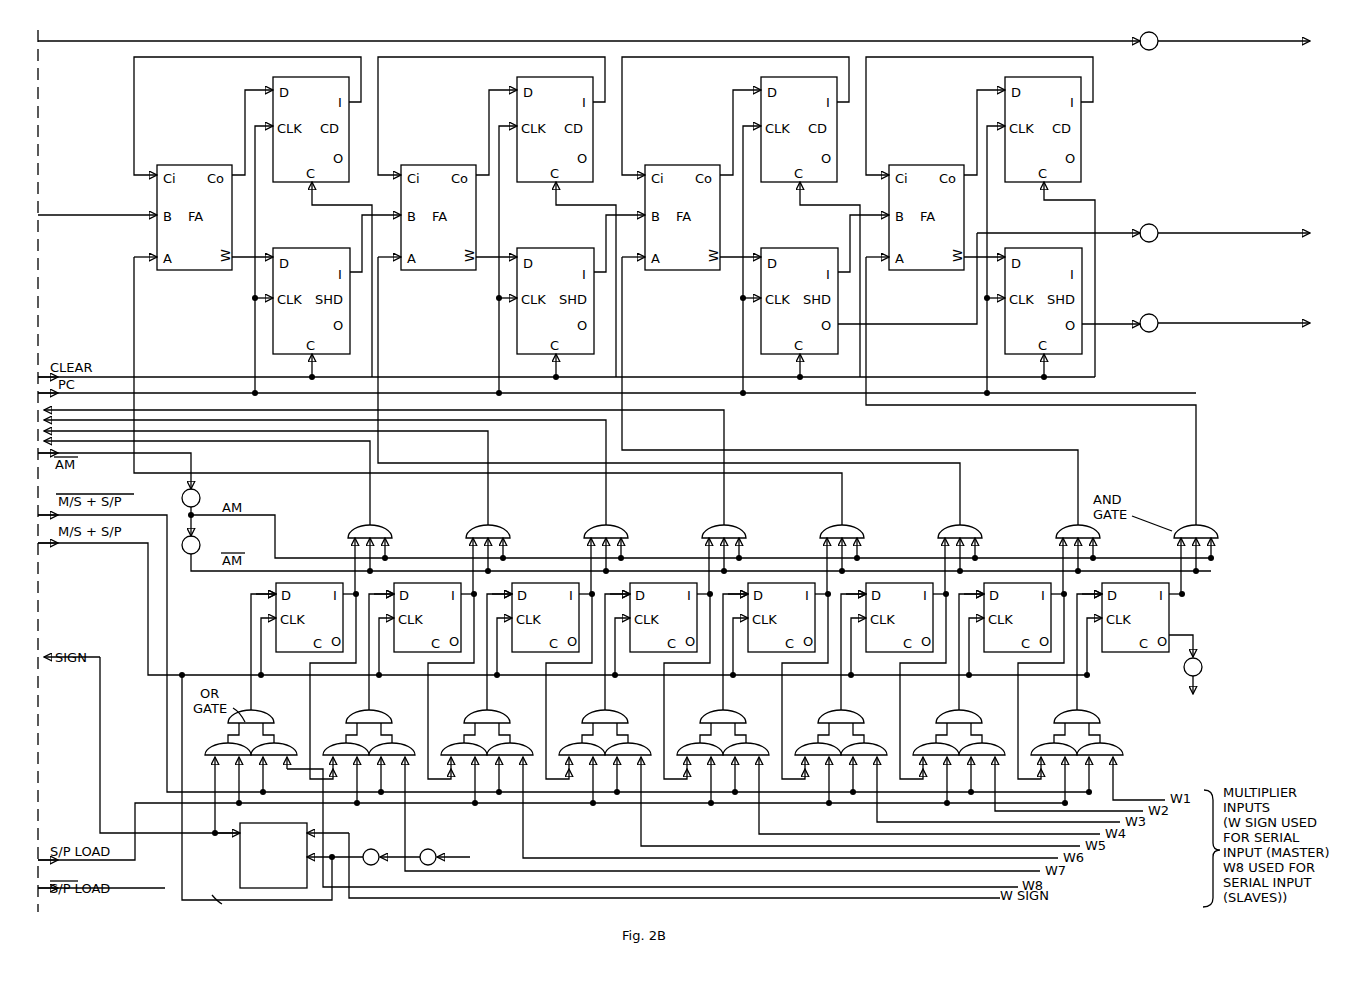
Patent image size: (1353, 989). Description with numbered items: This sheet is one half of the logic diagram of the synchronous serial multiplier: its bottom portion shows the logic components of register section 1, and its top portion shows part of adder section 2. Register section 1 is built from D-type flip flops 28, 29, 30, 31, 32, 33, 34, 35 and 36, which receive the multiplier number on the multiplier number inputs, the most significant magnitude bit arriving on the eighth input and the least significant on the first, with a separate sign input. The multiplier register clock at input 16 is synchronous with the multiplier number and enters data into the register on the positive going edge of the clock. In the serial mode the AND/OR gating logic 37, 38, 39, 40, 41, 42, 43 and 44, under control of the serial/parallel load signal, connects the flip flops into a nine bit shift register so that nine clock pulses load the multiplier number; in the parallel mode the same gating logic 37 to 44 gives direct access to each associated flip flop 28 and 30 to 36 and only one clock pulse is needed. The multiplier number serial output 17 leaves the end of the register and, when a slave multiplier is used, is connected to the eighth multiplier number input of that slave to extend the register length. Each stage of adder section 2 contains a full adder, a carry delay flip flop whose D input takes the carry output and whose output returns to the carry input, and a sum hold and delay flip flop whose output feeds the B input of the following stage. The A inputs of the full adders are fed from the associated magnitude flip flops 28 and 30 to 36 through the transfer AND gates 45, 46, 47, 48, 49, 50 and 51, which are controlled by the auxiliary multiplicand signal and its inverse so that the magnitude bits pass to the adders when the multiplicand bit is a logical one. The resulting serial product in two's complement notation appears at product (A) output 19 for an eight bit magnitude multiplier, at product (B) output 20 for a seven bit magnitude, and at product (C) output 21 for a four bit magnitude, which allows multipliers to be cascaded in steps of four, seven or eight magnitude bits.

The register section 1 is at (136, 654).
The adder section 2 is at (946, 40).
The multiplier register clock input 16 is at (470, 857).
The multiplier number serial output 17 is at (1195, 684).
The product (A) output 19 is at (1232, 326).
The product (B) output 20 is at (1232, 236).
The product (C) output 21 is at (1236, 44).
The multiplier number magnitude flip flop 28 is at (290, 656).
The flip flop 29 is at (240, 872).
The multiplier number magnitude flip flop 30 is at (408, 656).
The multiplier number magnitude flip flop 31 is at (526, 656).
The multiplier number magnitude flip flop 32 is at (644, 656).
The multiplier number magnitude flip flop 33 is at (762, 656).
The multiplier number magnitude flip flop 34 is at (880, 656).
The multiplier number magnitude flip flop 35 is at (998, 656).
The multiplier number magnitude flip flop 36 is at (1116, 656).
The AND/OR gating logic 37 is at (277, 742).
The AND/OR gating logic 38 is at (395, 742).
The AND/OR gating logic 39 is at (513, 742).
The AND/OR gating logic 40 is at (631, 742).
The AND/OR gating logic 41 is at (749, 742).
The AND/OR gating logic 42 is at (867, 742).
The AND/OR gating logic 43 is at (985, 742).
The AND/OR gating logic 44 is at (1103, 742).
The transfer AND gate 45 is at (382, 533).
The transfer AND gate 46 is at (500, 533).
The transfer AND gate 47 is at (618, 533).
The transfer AND gate 48 is at (736, 533).
The transfer AND gate 49 is at (854, 533).
The transfer AND gate 50 is at (972, 533).
The transfer AND gate 51 is at (1070, 530).